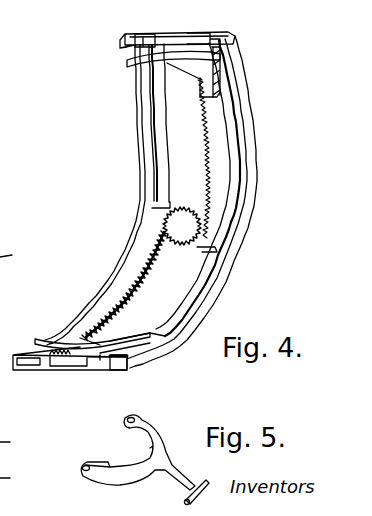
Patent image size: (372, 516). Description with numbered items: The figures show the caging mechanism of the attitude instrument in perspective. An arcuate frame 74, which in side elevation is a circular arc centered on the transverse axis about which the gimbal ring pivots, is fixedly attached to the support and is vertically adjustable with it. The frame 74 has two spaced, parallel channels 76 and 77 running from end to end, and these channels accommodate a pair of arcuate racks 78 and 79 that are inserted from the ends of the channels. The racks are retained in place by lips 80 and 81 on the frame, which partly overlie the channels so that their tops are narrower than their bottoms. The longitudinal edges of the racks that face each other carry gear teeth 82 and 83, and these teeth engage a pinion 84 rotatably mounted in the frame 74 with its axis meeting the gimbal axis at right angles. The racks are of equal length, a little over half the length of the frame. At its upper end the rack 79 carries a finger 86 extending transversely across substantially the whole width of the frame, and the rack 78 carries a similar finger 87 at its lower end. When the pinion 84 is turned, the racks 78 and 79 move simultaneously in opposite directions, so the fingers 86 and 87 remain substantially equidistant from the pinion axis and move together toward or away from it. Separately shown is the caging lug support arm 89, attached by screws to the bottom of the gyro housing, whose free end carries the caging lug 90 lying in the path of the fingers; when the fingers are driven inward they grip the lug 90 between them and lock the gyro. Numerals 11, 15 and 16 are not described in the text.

In FIG. 4, the casing 11 is at (16, 257).
In FIG. 5, the arm 15 is at (15, 445).
In FIG. 5, the link 16 is at (15, 480).
In FIG. 4, the frame 74 is at (248, 233).
In FIG. 4, the channel 76 is at (147, 41).
In FIG. 4, the channel 77 is at (206, 34).
In FIG. 4, the arcuate rack 78 is at (143, 244).
In FIG. 4, the arcuate rack 79 is at (222, 169).
In FIG. 4, the lip 80 is at (25, 355).
In FIG. 4, the lip 81 is at (125, 360).
In FIG. 4, the gear teeth 82 is at (142, 292).
In FIG. 4, the gear teeth 83 is at (203, 153).
In FIG. 4, the pinion 84 is at (181, 220).
In FIG. 4, the finger 86 is at (127, 63).
In FIG. 4, the finger 87 is at (50, 338).
In FIG. 5, the caging lug support arm 89 is at (160, 488).
In FIG. 5, the caging lug 90 is at (202, 485).